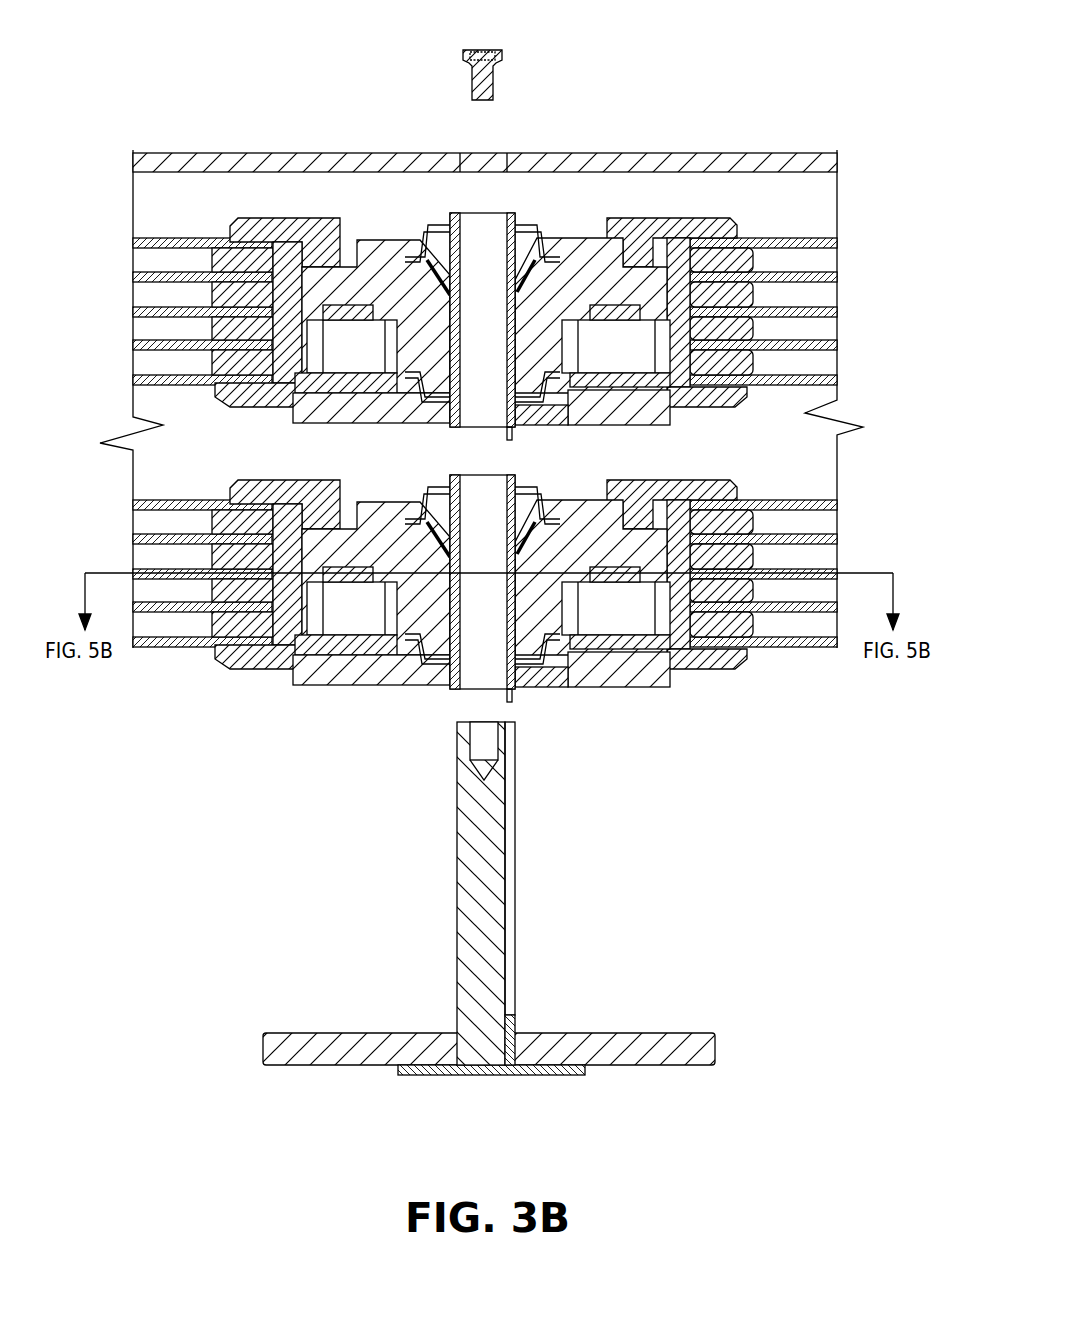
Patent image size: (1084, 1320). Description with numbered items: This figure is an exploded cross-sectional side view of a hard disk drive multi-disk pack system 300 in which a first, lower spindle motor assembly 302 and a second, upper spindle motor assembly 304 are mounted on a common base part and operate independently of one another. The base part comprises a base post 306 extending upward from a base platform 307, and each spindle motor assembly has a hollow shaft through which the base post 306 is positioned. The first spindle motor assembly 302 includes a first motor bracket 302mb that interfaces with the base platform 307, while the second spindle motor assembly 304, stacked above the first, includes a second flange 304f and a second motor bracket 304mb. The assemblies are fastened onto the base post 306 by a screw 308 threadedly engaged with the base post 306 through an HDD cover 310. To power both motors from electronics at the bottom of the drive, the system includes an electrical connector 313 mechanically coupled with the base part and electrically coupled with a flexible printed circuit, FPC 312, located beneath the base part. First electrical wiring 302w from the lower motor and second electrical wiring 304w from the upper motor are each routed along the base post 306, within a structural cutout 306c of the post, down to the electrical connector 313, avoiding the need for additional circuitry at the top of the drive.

The multi-disk pack system 300 is at (146, 62).
The first spindle motor assembly 302 is at (542, 599).
The first motor bracket 302mb is at (508, 620).
The first electrical wiring 302w is at (539, 616).
The second spindle motor assembly 304 is at (547, 330).
The second flange 304f is at (703, 398).
The second motor bracket 304mb is at (607, 415).
The second electrical wiring 304w is at (512, 432).
The base post 306 is at (508, 920).
The structural cutout 306c is at (512, 912).
The base platform 307 is at (705, 1048).
The screw 308 is at (483, 72).
The HDD cover 310 is at (720, 152).
The FPC 312 is at (560, 1072).
The electrical connector 313 is at (508, 1055).